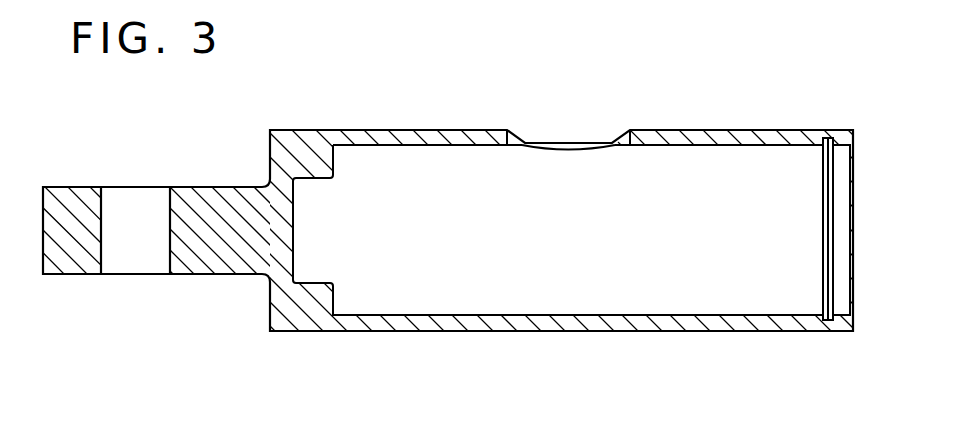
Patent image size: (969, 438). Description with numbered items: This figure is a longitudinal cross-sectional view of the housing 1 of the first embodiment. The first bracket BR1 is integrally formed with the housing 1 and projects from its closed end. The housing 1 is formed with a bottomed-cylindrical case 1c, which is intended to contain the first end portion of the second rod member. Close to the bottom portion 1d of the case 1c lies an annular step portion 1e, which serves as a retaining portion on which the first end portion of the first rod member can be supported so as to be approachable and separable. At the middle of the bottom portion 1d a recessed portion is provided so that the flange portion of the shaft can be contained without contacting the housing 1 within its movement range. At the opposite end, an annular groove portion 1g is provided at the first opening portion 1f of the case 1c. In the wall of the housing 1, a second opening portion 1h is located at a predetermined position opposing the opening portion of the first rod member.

The housing 1 is at (507, 233).
The case 1c is at (425, 138).
The bottom portion 1d is at (296, 266).
The step portion 1e is at (335, 302).
The first opening portion 1f is at (852, 293).
The groove portion 1g is at (827, 165).
The second opening portion 1h is at (518, 142).
The first bracket BR1 is at (62, 192).